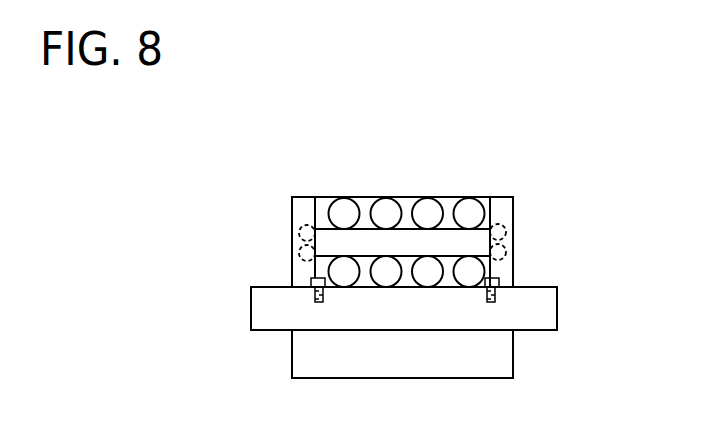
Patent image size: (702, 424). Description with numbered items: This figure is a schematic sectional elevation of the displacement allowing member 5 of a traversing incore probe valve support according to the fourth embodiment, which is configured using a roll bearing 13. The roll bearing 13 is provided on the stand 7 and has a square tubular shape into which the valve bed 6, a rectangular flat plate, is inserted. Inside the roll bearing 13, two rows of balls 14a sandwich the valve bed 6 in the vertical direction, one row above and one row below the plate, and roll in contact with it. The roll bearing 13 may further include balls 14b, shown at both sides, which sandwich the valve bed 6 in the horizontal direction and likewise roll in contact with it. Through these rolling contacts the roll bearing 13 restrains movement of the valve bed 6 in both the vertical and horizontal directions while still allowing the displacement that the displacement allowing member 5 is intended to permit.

The displacement allowing member 5 is at (613, 165).
The valve bed 6 is at (333, 247).
The stand 7 is at (540, 308).
The roll bearing 13 is at (521, 231).
The balls 14a is at (378, 197).
The balls 14b is at (505, 222).